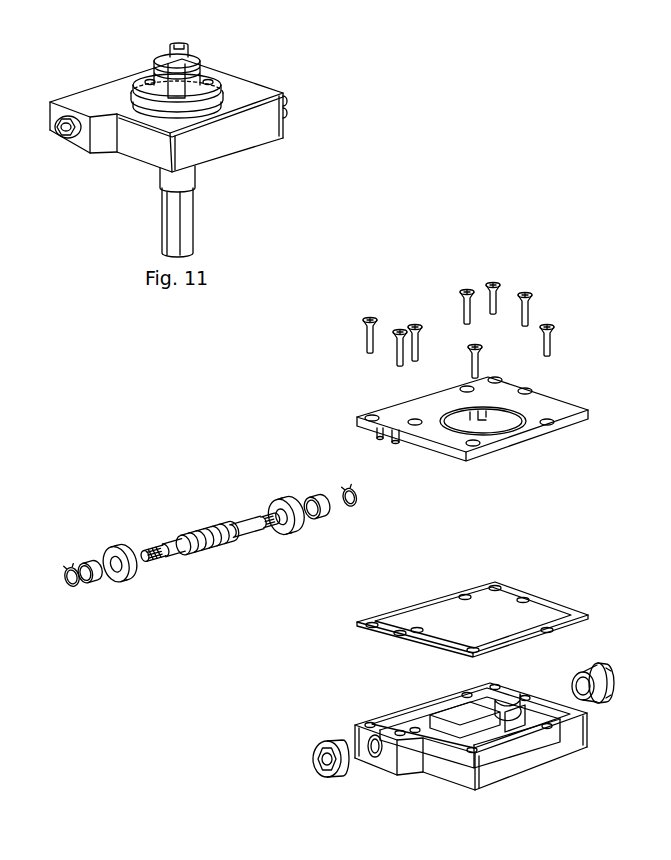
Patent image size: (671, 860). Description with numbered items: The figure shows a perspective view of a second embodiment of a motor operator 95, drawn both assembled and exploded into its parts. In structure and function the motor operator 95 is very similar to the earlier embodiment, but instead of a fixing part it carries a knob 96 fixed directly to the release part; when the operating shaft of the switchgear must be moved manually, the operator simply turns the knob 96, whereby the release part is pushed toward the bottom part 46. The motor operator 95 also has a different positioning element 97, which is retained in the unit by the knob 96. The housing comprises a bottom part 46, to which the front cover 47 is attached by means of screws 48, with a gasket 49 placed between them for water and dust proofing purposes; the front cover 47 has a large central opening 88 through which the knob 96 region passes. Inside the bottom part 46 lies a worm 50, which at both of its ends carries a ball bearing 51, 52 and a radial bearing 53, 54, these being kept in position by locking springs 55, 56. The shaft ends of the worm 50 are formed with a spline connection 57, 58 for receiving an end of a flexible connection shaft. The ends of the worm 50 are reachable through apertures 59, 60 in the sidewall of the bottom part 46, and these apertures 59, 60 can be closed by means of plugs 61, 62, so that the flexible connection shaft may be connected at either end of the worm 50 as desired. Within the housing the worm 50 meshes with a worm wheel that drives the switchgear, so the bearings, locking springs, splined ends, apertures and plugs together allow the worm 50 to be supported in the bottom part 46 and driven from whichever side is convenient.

The motor operator 95 is at (283, 73).
The knob 96 is at (175, 93).
The positioning element 97 is at (163, 227).
The screws 48 is at (365, 333).
The front cover 47 is at (500, 424).
The central opening 88 is at (510, 423).
The worm 50 is at (227, 545).
The ball bearing 51 is at (118, 542).
The ball bearing 52 is at (285, 502).
The radial bearing 53 is at (87, 562).
The radial bearing 54 is at (325, 492).
The locking spring 55 is at (73, 582).
The locking spring 56 is at (353, 505).
The spline connection 57 is at (153, 560).
The spline connection 58 is at (272, 528).
The gasket 49 is at (537, 598).
The bottom part 46 is at (454, 726).
The aperture 59 is at (367, 722).
The aperture 60 is at (507, 697).
The plug 61 is at (315, 772).
The plug 62 is at (597, 708).